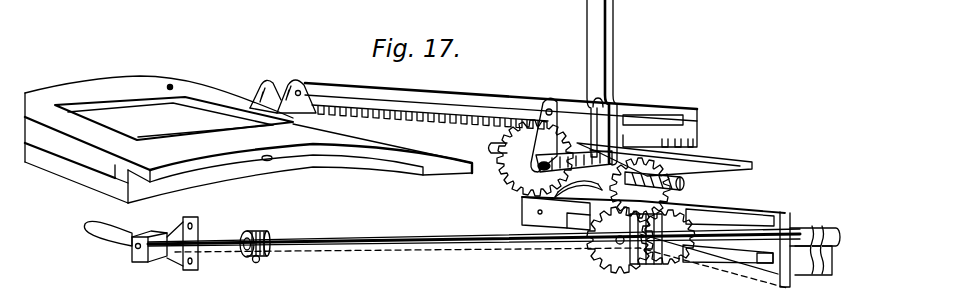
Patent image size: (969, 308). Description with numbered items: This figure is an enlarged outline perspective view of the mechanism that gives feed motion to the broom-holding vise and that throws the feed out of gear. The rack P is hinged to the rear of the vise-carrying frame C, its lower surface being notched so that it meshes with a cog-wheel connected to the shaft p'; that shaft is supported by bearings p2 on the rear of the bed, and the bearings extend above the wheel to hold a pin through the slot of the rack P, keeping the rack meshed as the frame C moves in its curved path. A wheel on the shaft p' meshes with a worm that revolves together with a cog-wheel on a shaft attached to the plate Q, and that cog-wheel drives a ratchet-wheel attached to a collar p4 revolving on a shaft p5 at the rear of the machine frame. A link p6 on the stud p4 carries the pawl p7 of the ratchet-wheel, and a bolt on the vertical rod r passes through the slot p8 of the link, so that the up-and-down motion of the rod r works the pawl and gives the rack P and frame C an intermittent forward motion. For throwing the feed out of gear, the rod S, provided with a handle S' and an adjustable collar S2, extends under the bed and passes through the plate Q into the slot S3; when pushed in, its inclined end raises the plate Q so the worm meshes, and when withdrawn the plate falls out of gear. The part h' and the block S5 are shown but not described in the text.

The vise-carrying frame C is at (248, 139).
The rack P is at (266, 79).
The shaft p' is at (597, 158).
The bearings p2 is at (547, 98).
The collar p4 is at (640, 188).
The shaft p5 is at (606, 244).
The link p6 is at (674, 252).
The pawl p7 is at (638, 268).
The slot p8 is at (544, 213).
The forked rod r is at (606, 133).
The curved lever arm h' is at (578, 191).
The plate Q is at (681, 242).
The rod or bar S is at (474, 250).
The handle S' is at (125, 241).
The adjustable collar S2 is at (258, 230).
The slot S3 is at (728, 236).
The slide block S5 is at (750, 243).